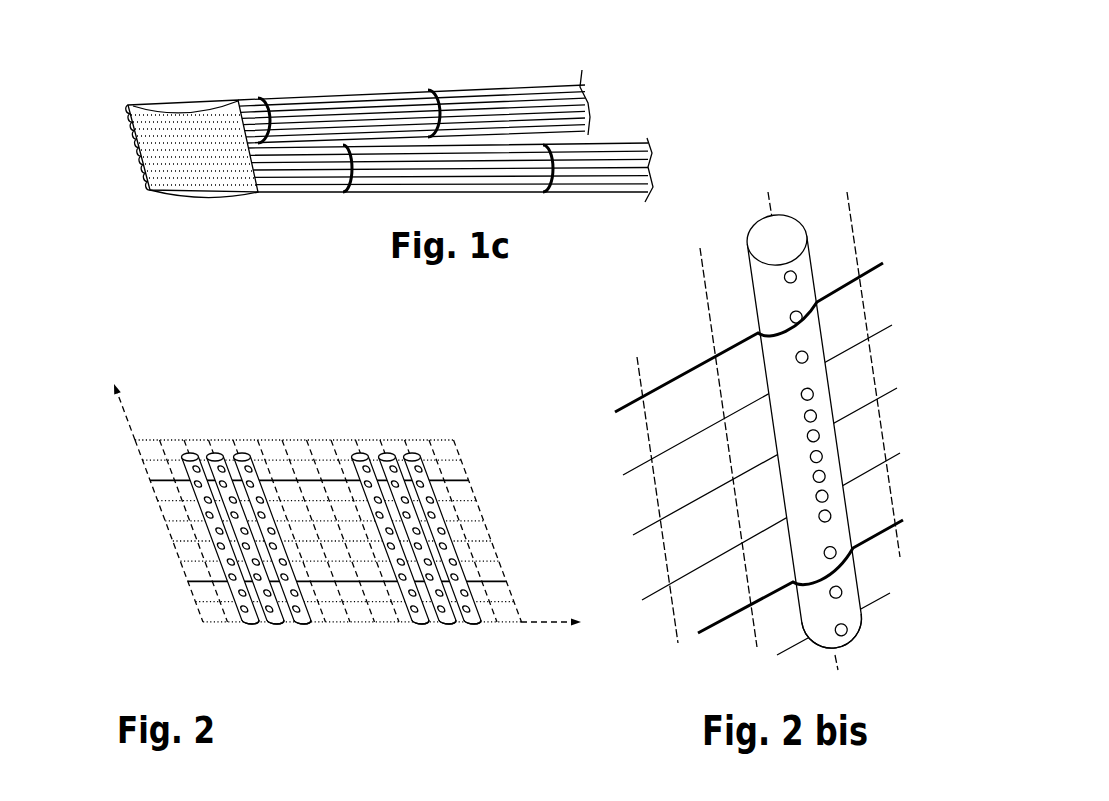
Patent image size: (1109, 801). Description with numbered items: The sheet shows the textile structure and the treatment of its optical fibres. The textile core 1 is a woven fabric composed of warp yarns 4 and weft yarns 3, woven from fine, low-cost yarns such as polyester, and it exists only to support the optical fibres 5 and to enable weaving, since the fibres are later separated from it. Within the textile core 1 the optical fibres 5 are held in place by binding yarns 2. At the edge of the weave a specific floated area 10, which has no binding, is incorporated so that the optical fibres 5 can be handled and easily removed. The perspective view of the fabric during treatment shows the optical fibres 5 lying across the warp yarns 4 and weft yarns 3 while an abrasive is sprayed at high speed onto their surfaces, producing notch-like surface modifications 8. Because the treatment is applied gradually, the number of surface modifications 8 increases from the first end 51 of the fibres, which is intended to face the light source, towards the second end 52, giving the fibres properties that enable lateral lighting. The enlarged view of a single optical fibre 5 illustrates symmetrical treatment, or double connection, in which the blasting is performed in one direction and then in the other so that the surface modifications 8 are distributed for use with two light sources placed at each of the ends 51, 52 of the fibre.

In FIG. 2, the textile core 1 is at (168, 512).
In FIG. 1c, the binding yarns 2 is at (272, 120).
In FIG. 2, the binding yarns 2 is at (307, 480).
In FIG. 2 bis, the binding yarns 2 is at (692, 365).
In FIG. 2, the weft yarns 3 is at (213, 588).
In FIG. 2 bis, the weft yarns 3 is at (653, 487).
In FIG. 2, the warp yarns 4 is at (503, 598).
In FIG. 2 bis, the warp yarns 4 is at (668, 441).
In FIG. 1c, the optical fibres 5 is at (405, 107).
In FIG. 2, the optical fibres 5 is at (403, 600).
In FIG. 2 bis, the optical fibres 5 is at (753, 312).
In FIG. 2, the surface modifications 8 is at (427, 553).
In FIG. 2 bis, the surface modifications 8 is at (820, 395).
In FIG. 1c, the floated area 10 is at (200, 177).
In FIG. 2, the first end 51 is at (302, 623).
In FIG. 2 bis, the first end 51 is at (862, 647).
In FIG. 2, the second end 52 is at (242, 452).
In FIG. 2 bis, the second end 52 is at (787, 235).